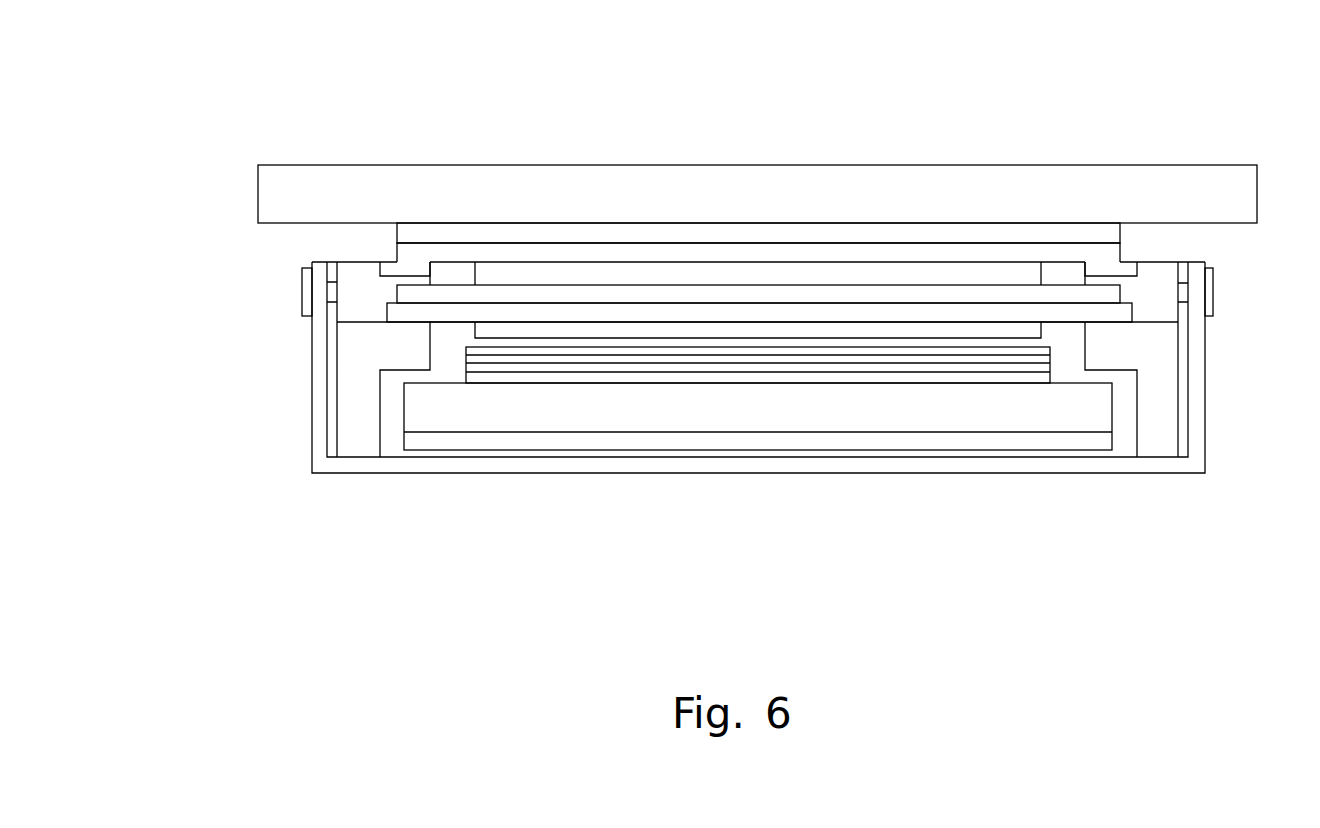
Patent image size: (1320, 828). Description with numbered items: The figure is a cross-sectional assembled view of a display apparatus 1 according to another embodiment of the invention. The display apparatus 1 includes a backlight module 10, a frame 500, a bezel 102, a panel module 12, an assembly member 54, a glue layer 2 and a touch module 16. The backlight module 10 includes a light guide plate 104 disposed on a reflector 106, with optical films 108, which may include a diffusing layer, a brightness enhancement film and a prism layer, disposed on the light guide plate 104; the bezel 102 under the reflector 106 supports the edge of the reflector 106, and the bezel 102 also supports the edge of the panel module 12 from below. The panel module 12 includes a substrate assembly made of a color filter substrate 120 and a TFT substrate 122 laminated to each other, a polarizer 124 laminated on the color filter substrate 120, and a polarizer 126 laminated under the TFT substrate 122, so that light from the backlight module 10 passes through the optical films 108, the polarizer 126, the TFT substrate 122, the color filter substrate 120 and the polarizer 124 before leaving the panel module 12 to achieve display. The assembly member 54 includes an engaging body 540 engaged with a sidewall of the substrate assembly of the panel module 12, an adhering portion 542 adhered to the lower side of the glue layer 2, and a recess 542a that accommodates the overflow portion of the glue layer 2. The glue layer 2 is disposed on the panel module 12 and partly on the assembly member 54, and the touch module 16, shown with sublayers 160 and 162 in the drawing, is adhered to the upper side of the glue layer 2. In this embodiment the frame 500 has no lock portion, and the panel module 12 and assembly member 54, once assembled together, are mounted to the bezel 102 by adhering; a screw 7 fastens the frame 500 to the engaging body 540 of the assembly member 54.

The display apparatus 1 is at (237, 120).
The glue layer 2 is at (540, 252).
The screw 7 is at (1215, 292).
The backlight module 10 is at (550, 503).
The panel module 12 is at (595, 523).
The touch module 16 is at (925, 100).
The assembly member 54 is at (170, 215).
The bezel 102 is at (354, 438).
The light guide plate 104 is at (1065, 412).
The reflector 106 is at (978, 445).
The optical films 108 is at (460, 362).
The color filter substrate 120 is at (857, 293).
The TFT substrate 122 is at (771, 313).
The polarizer 124 is at (686, 275).
The polarizer 126 is at (593, 330).
The cover plate 160 is at (922, 188).
The adhesive layer 162 is at (1028, 233).
The frame 500 is at (318, 438).
The engaging body 540 is at (345, 313).
The adhering portion 542 is at (442, 270).
The recess 542a is at (390, 276).